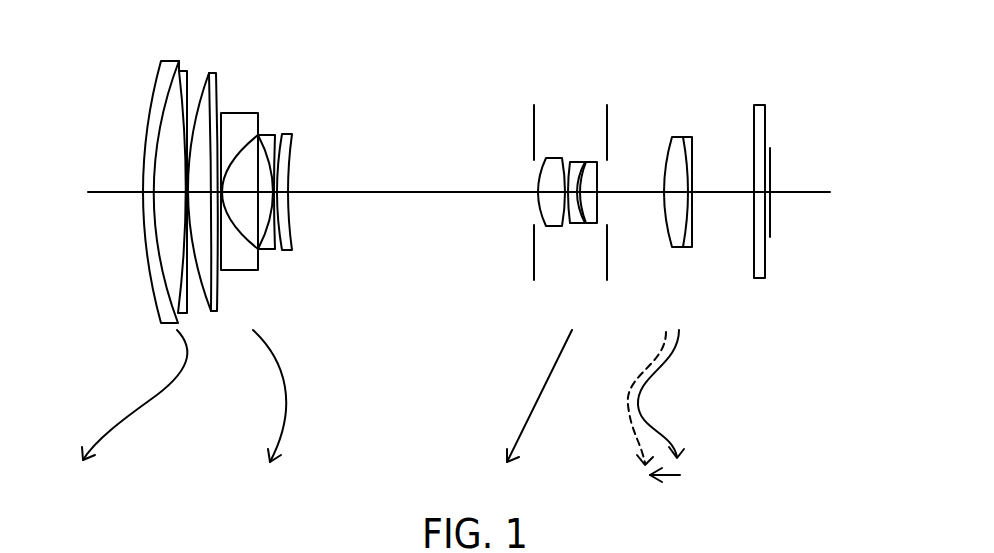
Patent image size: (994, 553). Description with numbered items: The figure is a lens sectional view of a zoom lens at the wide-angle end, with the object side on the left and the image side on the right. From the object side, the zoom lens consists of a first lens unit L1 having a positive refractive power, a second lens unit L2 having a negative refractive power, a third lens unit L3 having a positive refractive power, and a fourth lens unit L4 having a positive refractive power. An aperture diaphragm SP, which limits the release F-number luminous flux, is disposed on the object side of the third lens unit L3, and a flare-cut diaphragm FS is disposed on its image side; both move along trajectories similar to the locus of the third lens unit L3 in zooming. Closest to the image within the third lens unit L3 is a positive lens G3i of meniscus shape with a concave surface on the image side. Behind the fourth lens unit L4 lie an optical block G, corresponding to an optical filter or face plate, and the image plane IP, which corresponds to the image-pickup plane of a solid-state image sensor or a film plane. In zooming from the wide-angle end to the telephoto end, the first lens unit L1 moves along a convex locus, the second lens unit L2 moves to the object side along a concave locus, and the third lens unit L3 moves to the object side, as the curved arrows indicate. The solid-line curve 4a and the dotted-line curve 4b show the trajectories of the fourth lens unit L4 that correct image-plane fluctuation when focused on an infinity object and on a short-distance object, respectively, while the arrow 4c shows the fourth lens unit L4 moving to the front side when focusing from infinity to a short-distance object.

The first lens unit L1 is at (144, 53).
The second lens unit L2 is at (220, 53).
The third lens unit L3 is at (536, 53).
The fourth lens unit L4 is at (690, 53).
The optical block G is at (754, 53).
The image plane IP is at (795, 192).
The aperture diaphragm SP is at (534, 268).
The flare-cut diaphragm FS is at (607, 268).
The positive lens G3i is at (595, 166).
The solid-line curve 4a is at (668, 361).
The dotted-line curve 4b is at (630, 412).
The arrow 4c is at (670, 477).